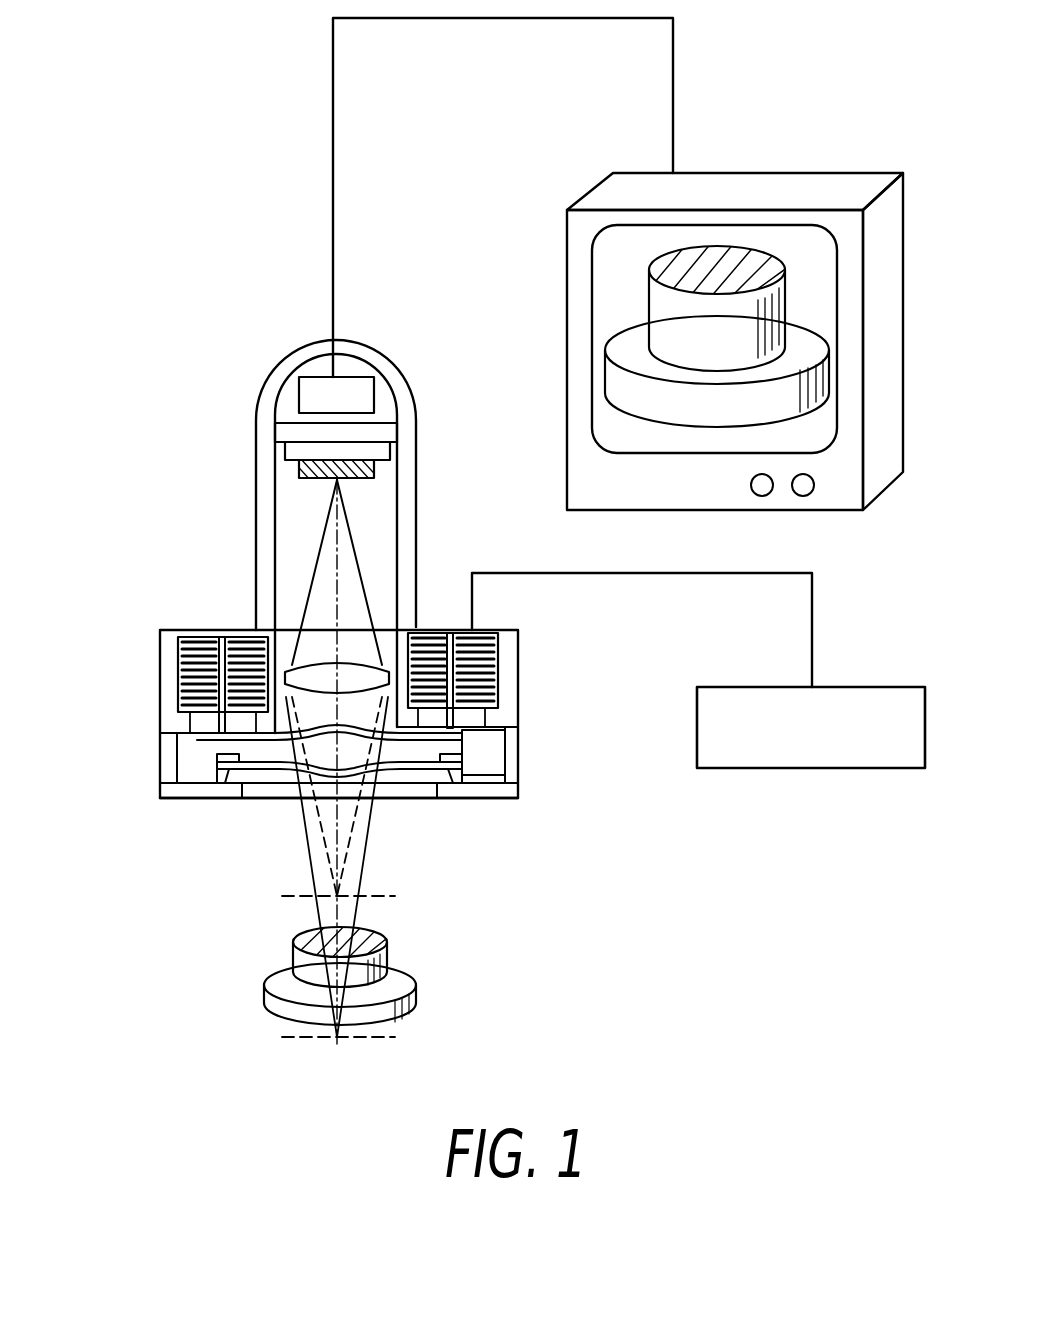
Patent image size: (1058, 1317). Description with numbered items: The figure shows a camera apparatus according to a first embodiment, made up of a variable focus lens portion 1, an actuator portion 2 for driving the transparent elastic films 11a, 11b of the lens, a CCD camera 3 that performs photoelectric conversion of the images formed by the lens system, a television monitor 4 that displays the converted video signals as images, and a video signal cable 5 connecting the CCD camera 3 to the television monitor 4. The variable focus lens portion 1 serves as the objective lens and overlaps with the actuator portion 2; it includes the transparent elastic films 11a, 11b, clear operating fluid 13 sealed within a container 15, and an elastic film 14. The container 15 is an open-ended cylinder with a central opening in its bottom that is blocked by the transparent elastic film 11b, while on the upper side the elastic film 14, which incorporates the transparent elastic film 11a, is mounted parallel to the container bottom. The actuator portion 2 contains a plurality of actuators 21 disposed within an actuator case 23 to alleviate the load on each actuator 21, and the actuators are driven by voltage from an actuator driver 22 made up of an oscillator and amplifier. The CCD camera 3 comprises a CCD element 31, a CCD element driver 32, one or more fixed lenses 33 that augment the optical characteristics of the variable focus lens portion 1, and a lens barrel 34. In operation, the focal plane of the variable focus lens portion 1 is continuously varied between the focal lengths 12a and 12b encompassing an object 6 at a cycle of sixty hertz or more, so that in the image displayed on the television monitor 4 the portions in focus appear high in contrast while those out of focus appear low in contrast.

The variable focus lens portion 1 is at (553, 768).
The actuator portion 2 is at (568, 636).
The CCD camera 3 is at (347, 694).
The television monitor 4 is at (779, 173).
The video signal cable 5 is at (333, 259).
The object 6 is at (400, 977).
The transparent elastic film 11a is at (268, 800).
The transparent elastic film 11b is at (420, 800).
The focal length 12a is at (300, 897).
The focal length 12b is at (300, 1038).
The clear operating fluid 13 is at (485, 773).
The elastic film 14 is at (197, 736).
The container 15 is at (518, 740).
The actuator 21 is at (498, 670).
The actuator driver 22 is at (867, 687).
The actuator case 23 is at (160, 648).
The CCD element 31 is at (299, 481).
The CCD element driver 32 is at (299, 395).
The fixed lens 33 is at (320, 663).
The lens barrel 34 is at (417, 402).